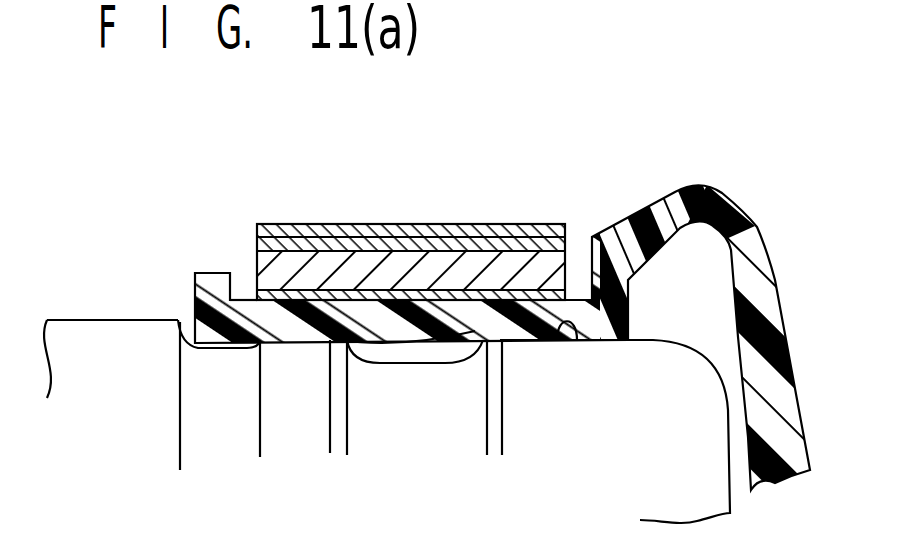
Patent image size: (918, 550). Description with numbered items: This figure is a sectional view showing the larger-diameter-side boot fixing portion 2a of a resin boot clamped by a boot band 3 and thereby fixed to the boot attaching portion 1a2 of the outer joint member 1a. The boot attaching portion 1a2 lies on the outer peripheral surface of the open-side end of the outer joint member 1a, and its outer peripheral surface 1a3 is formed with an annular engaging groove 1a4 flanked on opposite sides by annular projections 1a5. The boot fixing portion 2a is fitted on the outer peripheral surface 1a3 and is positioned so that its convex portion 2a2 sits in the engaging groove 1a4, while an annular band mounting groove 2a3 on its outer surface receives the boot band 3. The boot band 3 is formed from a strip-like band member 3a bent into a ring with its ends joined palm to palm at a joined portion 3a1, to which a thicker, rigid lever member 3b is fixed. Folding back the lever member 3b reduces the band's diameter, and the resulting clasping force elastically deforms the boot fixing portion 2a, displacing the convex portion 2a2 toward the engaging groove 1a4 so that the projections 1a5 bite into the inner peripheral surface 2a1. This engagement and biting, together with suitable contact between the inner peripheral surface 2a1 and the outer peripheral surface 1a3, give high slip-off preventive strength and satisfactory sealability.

The outer joint member 1a is at (93, 340).
The boot attaching portion 1a2 is at (222, 414).
The outer peripheral surface 1a3 is at (577, 340).
The engaging groove 1a4 is at (410, 353).
The annular projections 1a5 is at (320, 407).
The boot fixing portion 2a is at (188, 287).
The inner peripheral surface 2a1 is at (542, 340).
The convex portion 2a2 is at (374, 360).
The band mounting groove 2a3 is at (247, 298).
The boot band 3 is at (378, 192).
The band member 3a is at (546, 285).
The joined portion 3a1 is at (353, 224).
The lever member 3b is at (490, 263).